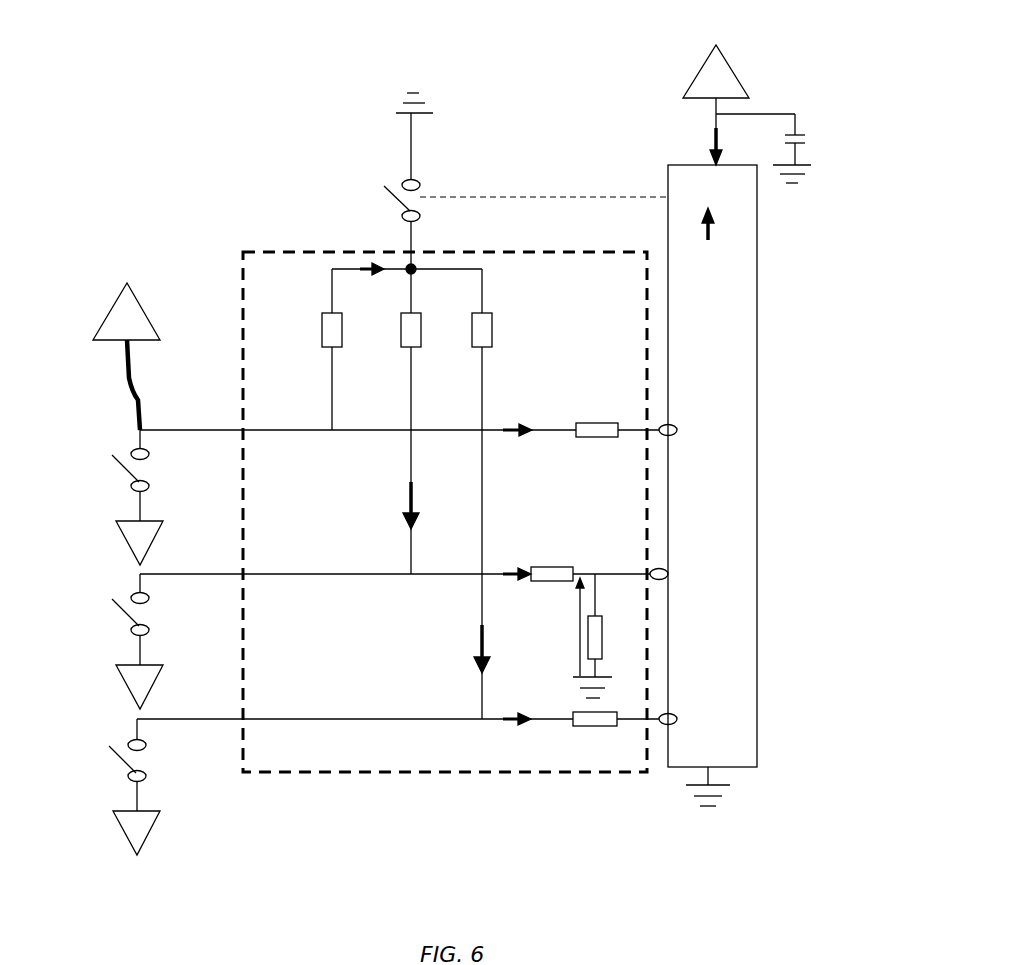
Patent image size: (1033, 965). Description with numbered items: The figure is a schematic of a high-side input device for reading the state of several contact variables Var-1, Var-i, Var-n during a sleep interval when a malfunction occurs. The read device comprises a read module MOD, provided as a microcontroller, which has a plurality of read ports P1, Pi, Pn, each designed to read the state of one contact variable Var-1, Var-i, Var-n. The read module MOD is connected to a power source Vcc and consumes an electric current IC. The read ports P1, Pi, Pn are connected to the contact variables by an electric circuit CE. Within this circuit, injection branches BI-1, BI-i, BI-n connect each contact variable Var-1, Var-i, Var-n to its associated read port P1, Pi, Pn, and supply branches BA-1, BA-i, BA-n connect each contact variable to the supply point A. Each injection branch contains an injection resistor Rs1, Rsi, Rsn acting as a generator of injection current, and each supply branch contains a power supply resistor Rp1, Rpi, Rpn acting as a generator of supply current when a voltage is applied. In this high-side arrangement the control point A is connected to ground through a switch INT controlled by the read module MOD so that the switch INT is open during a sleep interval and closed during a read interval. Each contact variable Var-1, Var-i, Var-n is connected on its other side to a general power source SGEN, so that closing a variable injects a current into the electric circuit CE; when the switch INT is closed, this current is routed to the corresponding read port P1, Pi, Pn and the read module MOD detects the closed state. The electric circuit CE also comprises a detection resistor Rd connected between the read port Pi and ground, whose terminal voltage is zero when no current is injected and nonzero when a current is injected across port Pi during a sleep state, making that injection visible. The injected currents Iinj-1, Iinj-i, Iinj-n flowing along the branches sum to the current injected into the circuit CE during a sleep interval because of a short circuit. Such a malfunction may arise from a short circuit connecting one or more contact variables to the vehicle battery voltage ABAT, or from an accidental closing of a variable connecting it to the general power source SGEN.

The battery voltage ABAT is at (126, 343).
The contact variable Var-n is at (104, 475).
The contact variable Var-i is at (104, 619).
The contact variable Var-1 is at (101, 765).
The general power source SGEN is at (119, 688).
The electric circuit CE is at (355, 772).
The switch INT is at (500, 181).
The control point A is at (407, 277).
The current SI is at (372, 285).
The power supply resistor Rpn is at (314, 349).
The power supply resistor Rpi is at (396, 421).
The power supply resistor Rp1 is at (467, 494).
The supply branch BA-n is at (331, 300).
The supply branch BA-i is at (411, 472).
The supply branch BA-1 is at (480, 612).
The injected current Iinj-n is at (519, 445).
The injected current Iinj-i is at (382, 505).
The injected current Iinj-1 is at (450, 649).
The injection branch BI-n is at (549, 428).
The injection branch BI-i is at (490, 573).
The injection branch BI-1 is at (538, 719).
The injection resistor Rsn is at (594, 448).
The injection resistor Rsi is at (570, 576).
The injection resistor Rs1 is at (571, 734).
The detection resistor Rd is at (601, 636).
The read port Pn is at (681, 432).
The read port Pi is at (675, 576).
The read port P1 is at (682, 721).
The read module MOD is at (712, 485).
The power source Vcc is at (739, 91).
The electric current IC is at (704, 146).